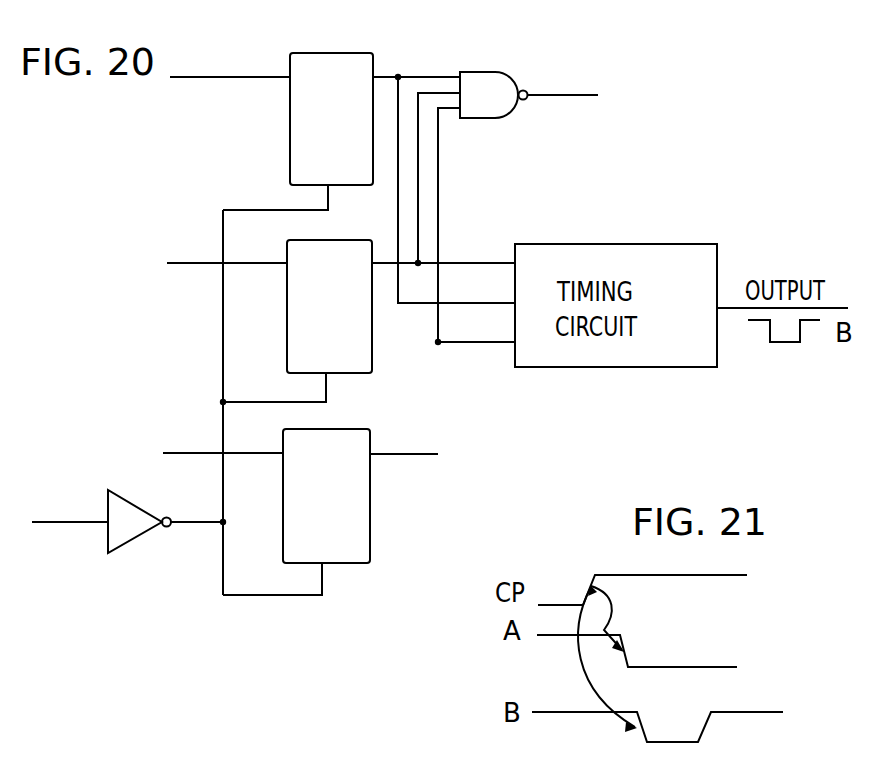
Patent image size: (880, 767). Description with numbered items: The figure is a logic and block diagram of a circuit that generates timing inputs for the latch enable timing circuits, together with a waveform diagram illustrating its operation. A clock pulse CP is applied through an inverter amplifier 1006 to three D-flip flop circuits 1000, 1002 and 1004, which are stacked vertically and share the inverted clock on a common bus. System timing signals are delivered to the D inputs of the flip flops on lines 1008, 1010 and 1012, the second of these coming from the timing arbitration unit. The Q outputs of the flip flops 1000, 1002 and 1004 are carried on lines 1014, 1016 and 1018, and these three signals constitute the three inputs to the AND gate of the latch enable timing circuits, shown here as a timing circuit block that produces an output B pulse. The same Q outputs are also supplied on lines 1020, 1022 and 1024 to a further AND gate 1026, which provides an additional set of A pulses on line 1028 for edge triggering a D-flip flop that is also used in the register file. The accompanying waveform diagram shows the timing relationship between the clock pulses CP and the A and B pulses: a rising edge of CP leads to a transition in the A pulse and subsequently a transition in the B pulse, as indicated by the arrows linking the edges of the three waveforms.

The D-flip flop circuit 1000 is at (356, 176).
The D-flip flop circuit 1002 is at (354, 363).
The D-flip flop circuit 1004 is at (352, 551).
The inverter amplifier 1006 is at (140, 534).
The line 1008 is at (228, 77).
The line 1010 is at (203, 265).
The line 1012 is at (184, 450).
The line 1014 is at (465, 263).
The line 1016 is at (497, 305).
The line 1018 is at (477, 343).
The line 1020 is at (437, 75).
The line 1022 is at (418, 150).
The line 1024 is at (438, 193).
The AND gate 1026 is at (506, 113).
The line 1028 is at (597, 97).